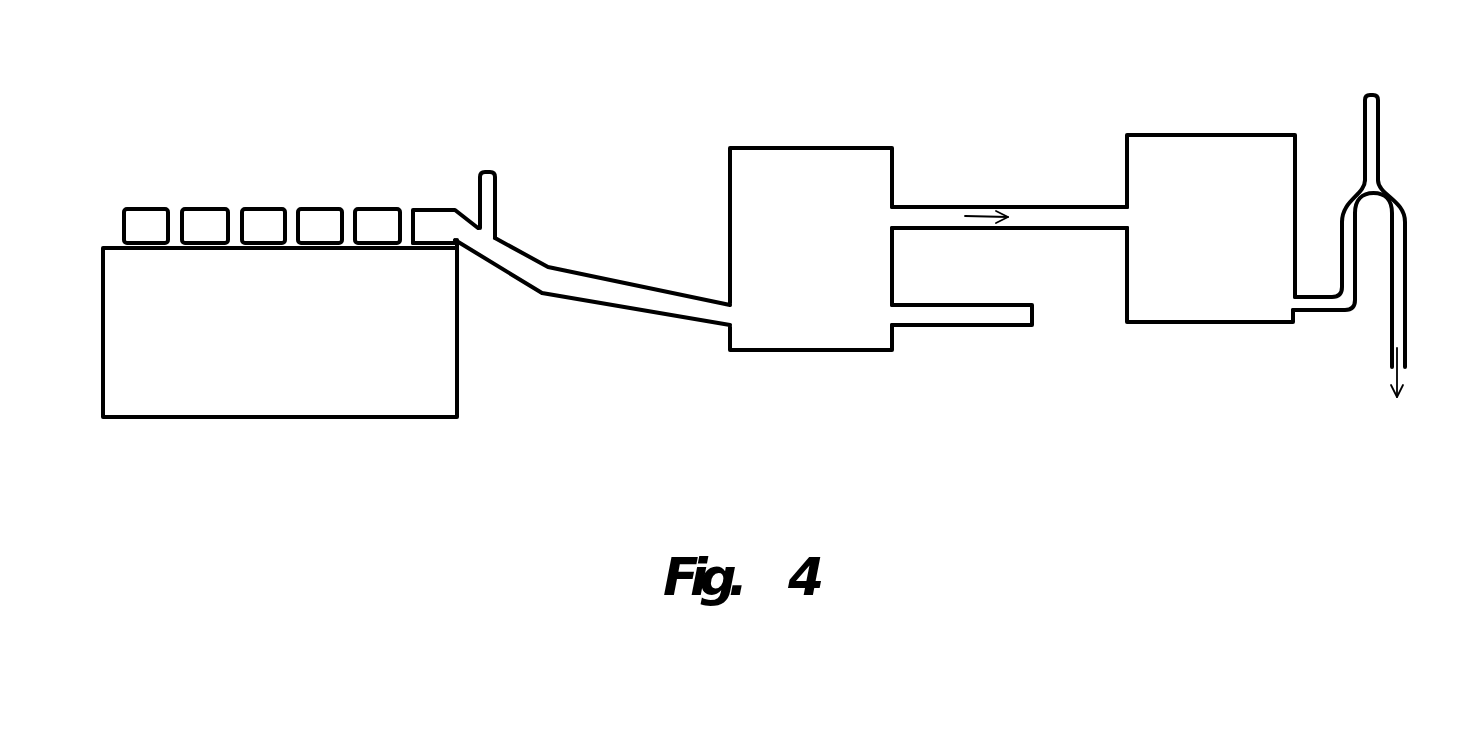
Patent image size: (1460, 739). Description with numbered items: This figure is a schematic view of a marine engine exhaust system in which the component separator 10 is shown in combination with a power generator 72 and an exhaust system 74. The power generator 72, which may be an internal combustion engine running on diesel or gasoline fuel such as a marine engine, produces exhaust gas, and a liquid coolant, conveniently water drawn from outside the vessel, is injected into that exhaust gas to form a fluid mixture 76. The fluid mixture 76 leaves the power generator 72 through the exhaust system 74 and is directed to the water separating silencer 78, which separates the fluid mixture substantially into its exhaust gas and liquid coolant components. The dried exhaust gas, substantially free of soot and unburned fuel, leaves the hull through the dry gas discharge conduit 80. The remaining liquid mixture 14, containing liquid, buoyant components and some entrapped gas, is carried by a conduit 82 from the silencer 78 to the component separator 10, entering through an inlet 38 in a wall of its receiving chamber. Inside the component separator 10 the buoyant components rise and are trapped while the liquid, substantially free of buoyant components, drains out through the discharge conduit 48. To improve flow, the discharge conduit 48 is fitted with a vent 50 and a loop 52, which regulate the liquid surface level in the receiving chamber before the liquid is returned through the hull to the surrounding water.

The component separator 10 is at (1225, 132).
The liquid mixture 14 is at (974, 215).
The inlet 38 is at (1125, 217).
The discharge conduit 48 is at (1317, 310).
The vent 50 is at (1380, 120).
The loop 52 is at (1403, 200).
The power generator 72 is at (327, 275).
The exhaust system 74 is at (551, 265).
The fluid mixture 76 is at (520, 267).
The water separating silencer 78 is at (785, 351).
The dry gas discharge conduit 80 is at (955, 327).
The conduit 82 is at (930, 207).